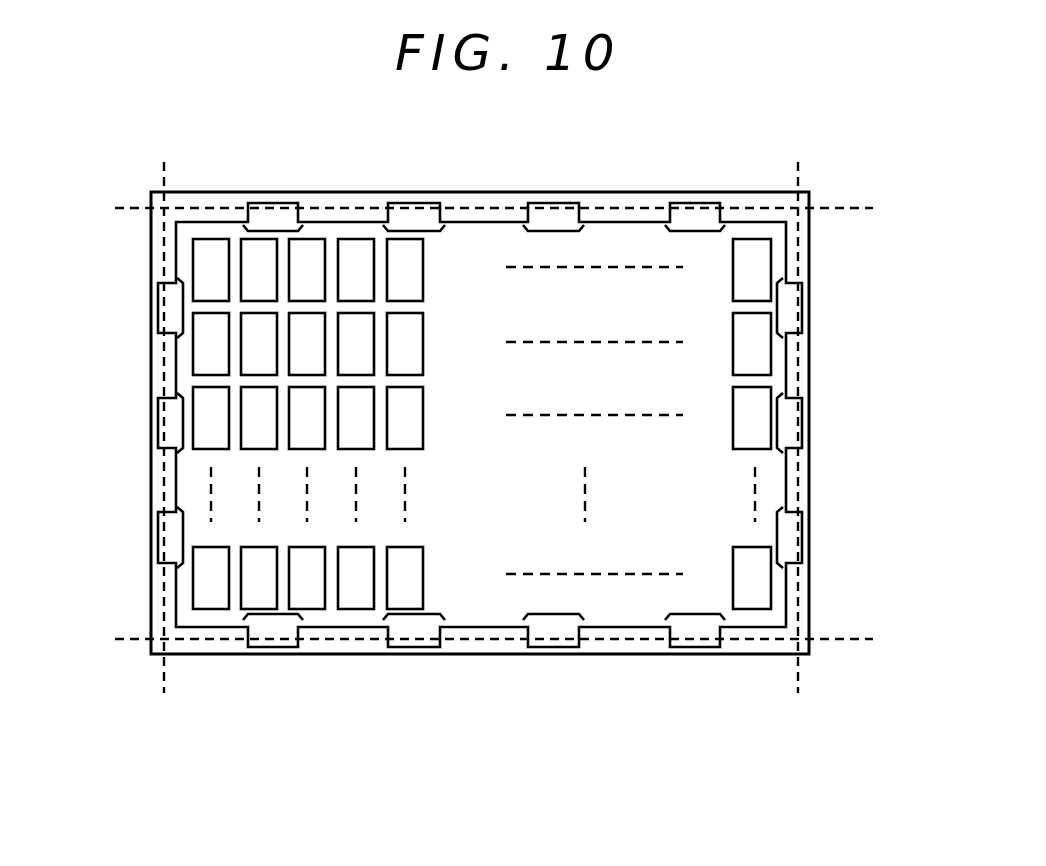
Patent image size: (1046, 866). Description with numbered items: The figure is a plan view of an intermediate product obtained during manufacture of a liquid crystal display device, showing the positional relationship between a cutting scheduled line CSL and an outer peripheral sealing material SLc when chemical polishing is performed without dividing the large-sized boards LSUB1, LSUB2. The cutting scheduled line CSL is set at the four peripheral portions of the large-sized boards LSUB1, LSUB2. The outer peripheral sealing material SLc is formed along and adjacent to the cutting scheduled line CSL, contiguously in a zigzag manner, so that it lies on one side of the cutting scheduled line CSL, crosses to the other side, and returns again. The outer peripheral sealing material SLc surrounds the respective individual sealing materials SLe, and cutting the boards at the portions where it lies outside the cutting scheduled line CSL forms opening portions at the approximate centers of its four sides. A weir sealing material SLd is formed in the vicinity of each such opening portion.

The cutting scheduled line CSL is at (496, 431).
The outer peripheral sealing material SLc is at (272, 205).
The weir sealing material SLd is at (554, 232).
The individual sealing material SLe is at (193, 253).
The large-sized board LSUB1 is at (809, 487).
The large-sized board LSUB2 is at (542, 423).